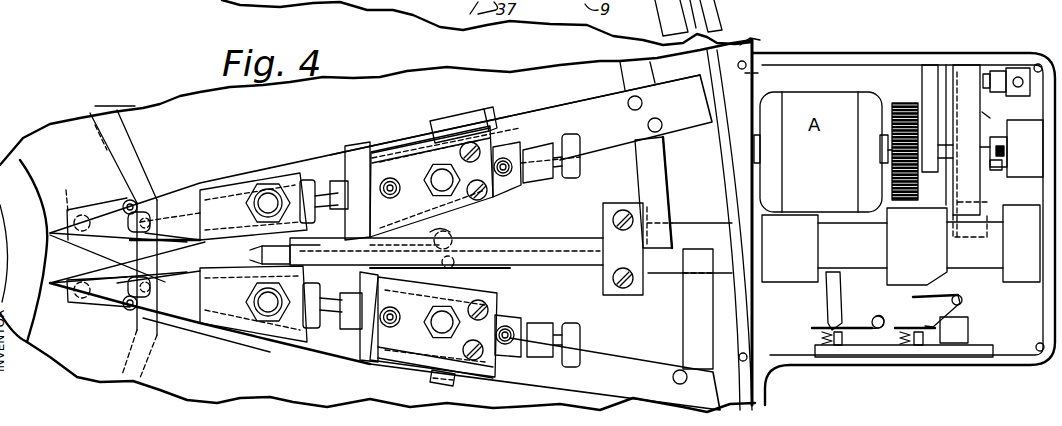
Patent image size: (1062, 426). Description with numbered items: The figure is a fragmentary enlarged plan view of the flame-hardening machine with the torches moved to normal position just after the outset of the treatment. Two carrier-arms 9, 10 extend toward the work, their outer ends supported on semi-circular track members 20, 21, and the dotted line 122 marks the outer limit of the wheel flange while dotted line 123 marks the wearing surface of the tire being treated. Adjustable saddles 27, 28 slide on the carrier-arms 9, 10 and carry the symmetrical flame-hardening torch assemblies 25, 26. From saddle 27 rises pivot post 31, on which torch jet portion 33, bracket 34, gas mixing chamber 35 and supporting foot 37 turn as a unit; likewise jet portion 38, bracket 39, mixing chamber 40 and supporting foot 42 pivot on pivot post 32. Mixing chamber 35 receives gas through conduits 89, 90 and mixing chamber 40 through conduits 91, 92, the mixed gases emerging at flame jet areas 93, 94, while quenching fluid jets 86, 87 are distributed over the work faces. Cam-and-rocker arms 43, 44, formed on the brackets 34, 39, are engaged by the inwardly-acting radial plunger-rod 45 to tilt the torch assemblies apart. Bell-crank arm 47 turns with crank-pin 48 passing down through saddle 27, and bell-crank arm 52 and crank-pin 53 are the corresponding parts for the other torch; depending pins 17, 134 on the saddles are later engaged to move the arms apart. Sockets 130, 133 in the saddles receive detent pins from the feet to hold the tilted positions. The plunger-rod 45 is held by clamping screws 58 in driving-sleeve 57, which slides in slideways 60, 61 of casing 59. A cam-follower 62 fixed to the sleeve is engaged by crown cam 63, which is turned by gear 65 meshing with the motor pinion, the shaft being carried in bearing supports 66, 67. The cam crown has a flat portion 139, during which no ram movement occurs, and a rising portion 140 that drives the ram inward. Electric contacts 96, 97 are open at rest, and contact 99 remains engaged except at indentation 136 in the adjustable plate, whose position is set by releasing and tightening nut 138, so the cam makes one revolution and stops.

The carrier-arm 9 is at (612, 350).
The carrier-arm 10 is at (572, 108).
The depending pin 17 is at (67, 312).
The semi-circular track member 20 is at (672, 172).
The semi-circular track member 21 is at (683, 337).
The flame-hardening torch assembly 25 is at (213, 335).
The flame-hardening torch assembly 26 is at (246, 160).
The adjustable saddle 27 is at (237, 343).
The adjustable saddle 28 is at (208, 178).
The pivot post 31 is at (266, 325).
The pivot post 32 is at (268, 190).
The torch jet portion 33 is at (182, 326).
The bracket 34 is at (322, 340).
The gas mixing chamber 35 is at (386, 358).
The supporting foot 37 is at (456, 386).
The torch jet portion 38 is at (176, 190).
The bracket 39 is at (317, 162).
The gas mixing chamber 40 is at (404, 145).
The supporting foot 42 is at (463, 114).
The cam-and-rocker arm 43 is at (282, 262).
The cam-and-rocker arm 44 is at (300, 250).
The plunger-rod 45 is at (545, 237).
The bell-crank arm 47 is at (123, 304).
The crank-pin 48 is at (133, 326).
The bell-crank arm 52 is at (123, 201).
The crank-pin 53 is at (132, 200).
The driving-sleeve 57 is at (685, 222).
The clamping screws 58 is at (624, 207).
The casing 59 is at (985, 50).
The slideway 60 is at (1022, 262).
The slideway 61 is at (784, 270).
The cam-follower 62 is at (958, 286).
The crown cam 63 is at (965, 78).
The gear 65 is at (904, 100).
The bearing support 66 is at (1020, 125).
The bearing support 67 is at (926, 78).
The quenching fluid jets 86 is at (110, 266).
The quenching fluid jets 87 is at (118, 246).
The conduit 89 is at (510, 320).
The conduit 90 is at (410, 335).
The conduit 91 is at (505, 160).
The conduit 92 is at (405, 175).
The flame jet area 93 is at (128, 286).
The flame jet area 94 is at (128, 224).
The electric contact 96 is at (864, 336).
The electric contact 97 is at (940, 336).
The contact 99 is at (1015, 70).
The dotted line 122 is at (123, 122).
The dotted line 123 is at (100, 132).
The socket 130 is at (440, 256).
The socket 133 is at (431, 248).
The depending pin 134 is at (92, 206).
The indentation 136 is at (986, 120).
The nut 138 is at (996, 172).
The flat portion 139 is at (1021, 243).
The rising portion 140 is at (946, 100).